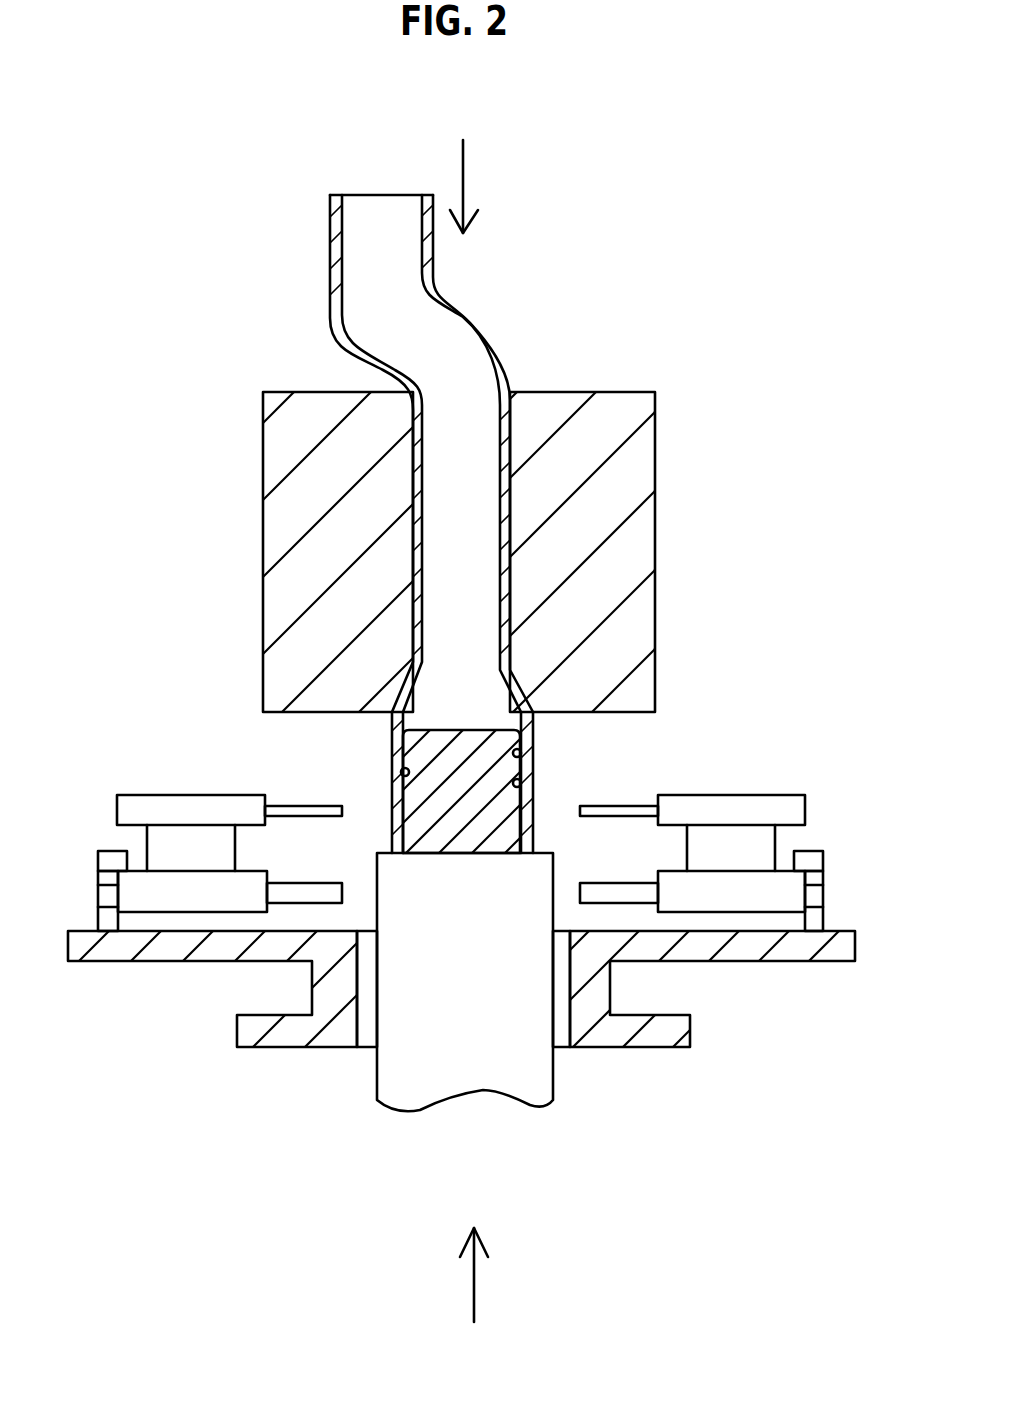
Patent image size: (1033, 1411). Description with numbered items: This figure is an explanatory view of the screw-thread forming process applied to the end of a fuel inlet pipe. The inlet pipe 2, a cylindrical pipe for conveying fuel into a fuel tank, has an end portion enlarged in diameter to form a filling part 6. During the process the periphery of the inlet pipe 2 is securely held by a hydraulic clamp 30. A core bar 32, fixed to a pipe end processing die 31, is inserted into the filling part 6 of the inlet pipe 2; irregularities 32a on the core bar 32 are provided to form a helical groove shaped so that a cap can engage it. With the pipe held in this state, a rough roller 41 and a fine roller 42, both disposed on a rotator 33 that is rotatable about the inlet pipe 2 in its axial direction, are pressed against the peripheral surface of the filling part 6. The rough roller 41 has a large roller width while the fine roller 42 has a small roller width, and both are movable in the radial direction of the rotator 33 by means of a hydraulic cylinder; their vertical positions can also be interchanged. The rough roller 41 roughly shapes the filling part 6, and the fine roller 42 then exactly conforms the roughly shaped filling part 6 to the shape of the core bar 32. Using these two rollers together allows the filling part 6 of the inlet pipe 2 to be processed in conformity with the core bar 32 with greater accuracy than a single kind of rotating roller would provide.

The inlet pipe 2 is at (510, 606).
The hydraulic clamp 30 is at (630, 490).
The pipe end processing die 31 is at (433, 1070).
The core bar 32 is at (420, 798).
The irregularities 32a is at (522, 753).
The rotator 33 is at (139, 953).
The rough roller 41 is at (620, 893).
The fine roller 42 is at (620, 803).
The filling part 6 is at (392, 753).